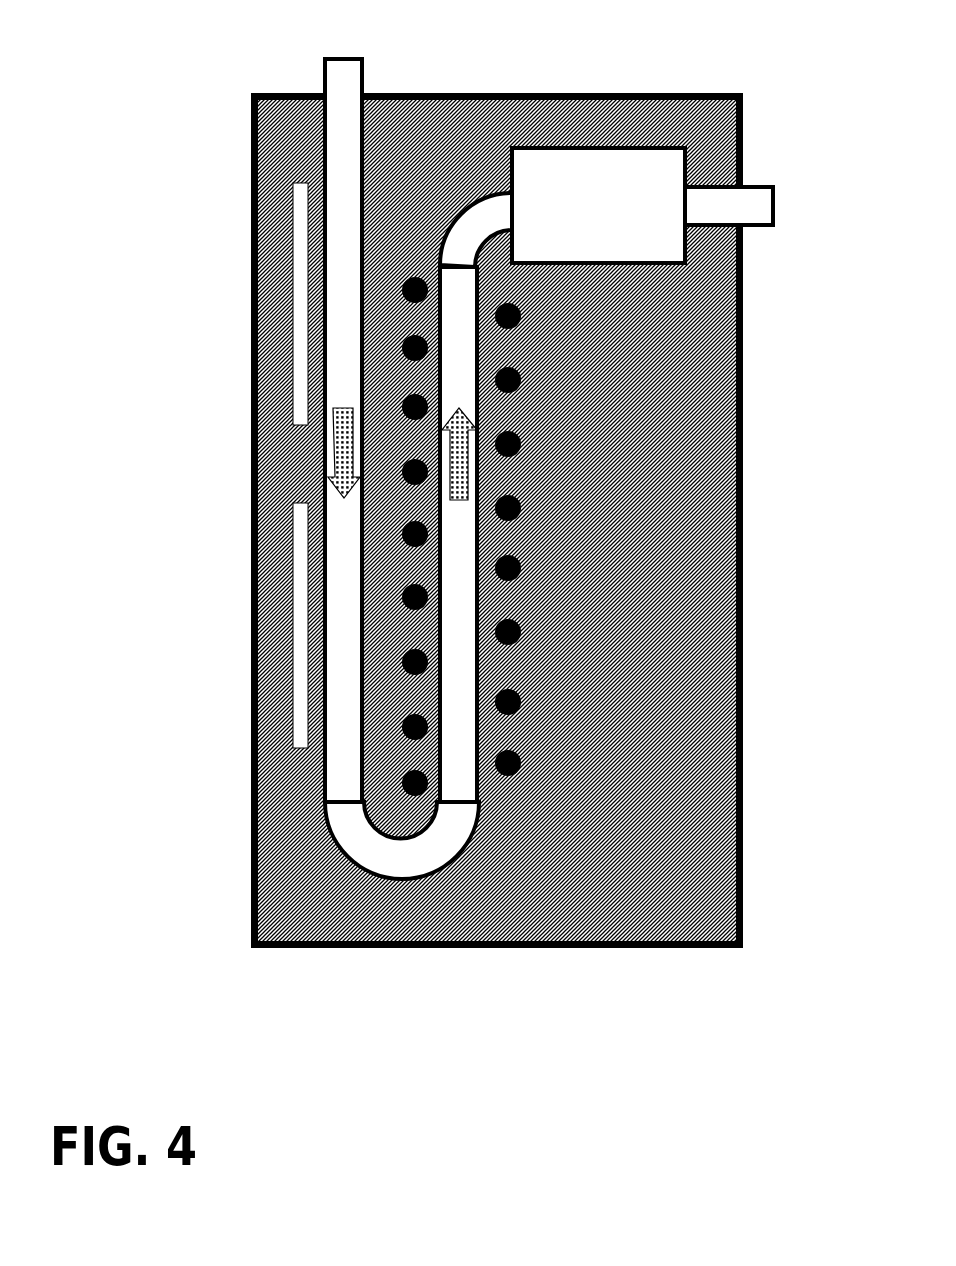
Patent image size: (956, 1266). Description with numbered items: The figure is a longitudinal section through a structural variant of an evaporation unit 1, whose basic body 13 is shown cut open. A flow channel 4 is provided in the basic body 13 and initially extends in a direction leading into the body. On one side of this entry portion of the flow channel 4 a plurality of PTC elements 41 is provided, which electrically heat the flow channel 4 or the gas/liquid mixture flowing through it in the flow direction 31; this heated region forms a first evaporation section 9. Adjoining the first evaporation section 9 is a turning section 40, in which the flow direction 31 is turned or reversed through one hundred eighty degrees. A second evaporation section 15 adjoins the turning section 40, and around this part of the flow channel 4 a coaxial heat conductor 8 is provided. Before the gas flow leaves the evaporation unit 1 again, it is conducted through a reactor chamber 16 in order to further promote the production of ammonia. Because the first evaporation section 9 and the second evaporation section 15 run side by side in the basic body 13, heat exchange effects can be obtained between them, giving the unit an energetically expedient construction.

The evaporation unit 1 is at (456, 569).
The flow channel 4 is at (343, 77).
The coaxial heat conductor 8 is at (512, 506).
The first evaporation section 9 is at (335, 777).
The basic body 13 is at (637, 715).
The second evaporation section 15 is at (458, 783).
The reactor chamber 16 is at (587, 195).
The flow direction 31 is at (333, 458).
The turning section 40 is at (390, 863).
The PTC elements 41 is at (290, 320).